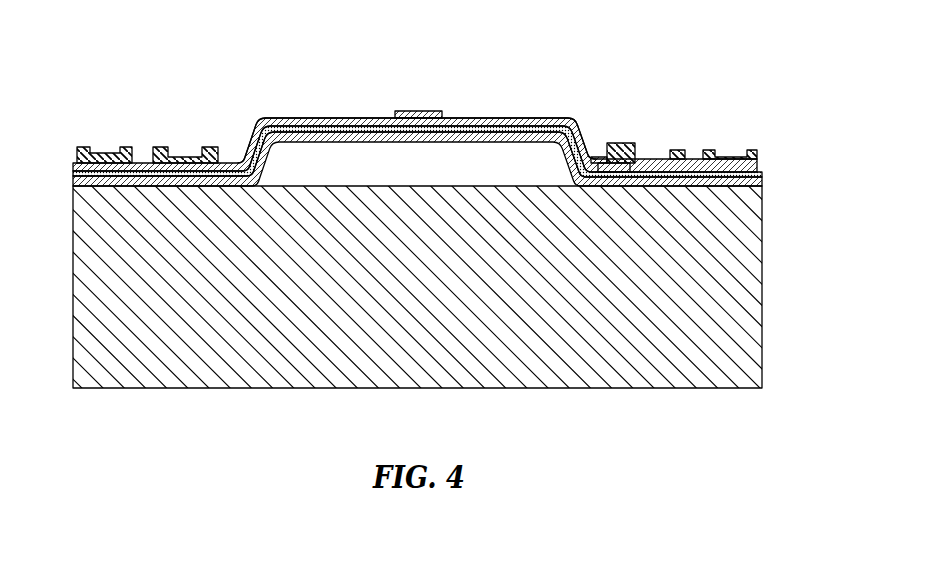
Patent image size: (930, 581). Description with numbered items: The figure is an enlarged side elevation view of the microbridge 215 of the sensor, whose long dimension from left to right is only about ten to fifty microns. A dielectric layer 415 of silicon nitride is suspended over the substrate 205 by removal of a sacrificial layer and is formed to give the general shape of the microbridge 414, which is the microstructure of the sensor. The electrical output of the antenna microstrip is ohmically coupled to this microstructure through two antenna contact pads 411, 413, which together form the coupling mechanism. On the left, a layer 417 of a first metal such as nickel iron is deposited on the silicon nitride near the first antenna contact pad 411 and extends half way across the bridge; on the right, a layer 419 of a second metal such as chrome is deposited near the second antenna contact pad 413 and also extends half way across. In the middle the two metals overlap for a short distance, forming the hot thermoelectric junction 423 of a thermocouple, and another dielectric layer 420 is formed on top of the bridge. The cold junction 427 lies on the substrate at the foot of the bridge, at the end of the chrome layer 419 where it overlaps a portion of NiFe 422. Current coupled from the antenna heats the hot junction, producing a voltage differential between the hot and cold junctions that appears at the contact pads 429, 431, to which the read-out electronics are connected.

The substrate 205 is at (692, 377).
The microbridge 215 is at (690, 50).
The first antenna contact pad 411 is at (186, 147).
The second antenna contact pad 413 is at (647, 153).
The microbridge 414 is at (417, 107).
The dielectric layer 415 is at (90, 182).
The layer of a first metal 417 is at (283, 118).
The layer of a second metal 419 is at (503, 118).
The dielectric layer 420 is at (338, 117).
The NiFe 422 is at (688, 162).
The hot thermoelectric junction 423 is at (408, 103).
The cold junction 427 is at (600, 156).
The contact pad 429 is at (106, 147).
The contact pad 431 is at (733, 157).